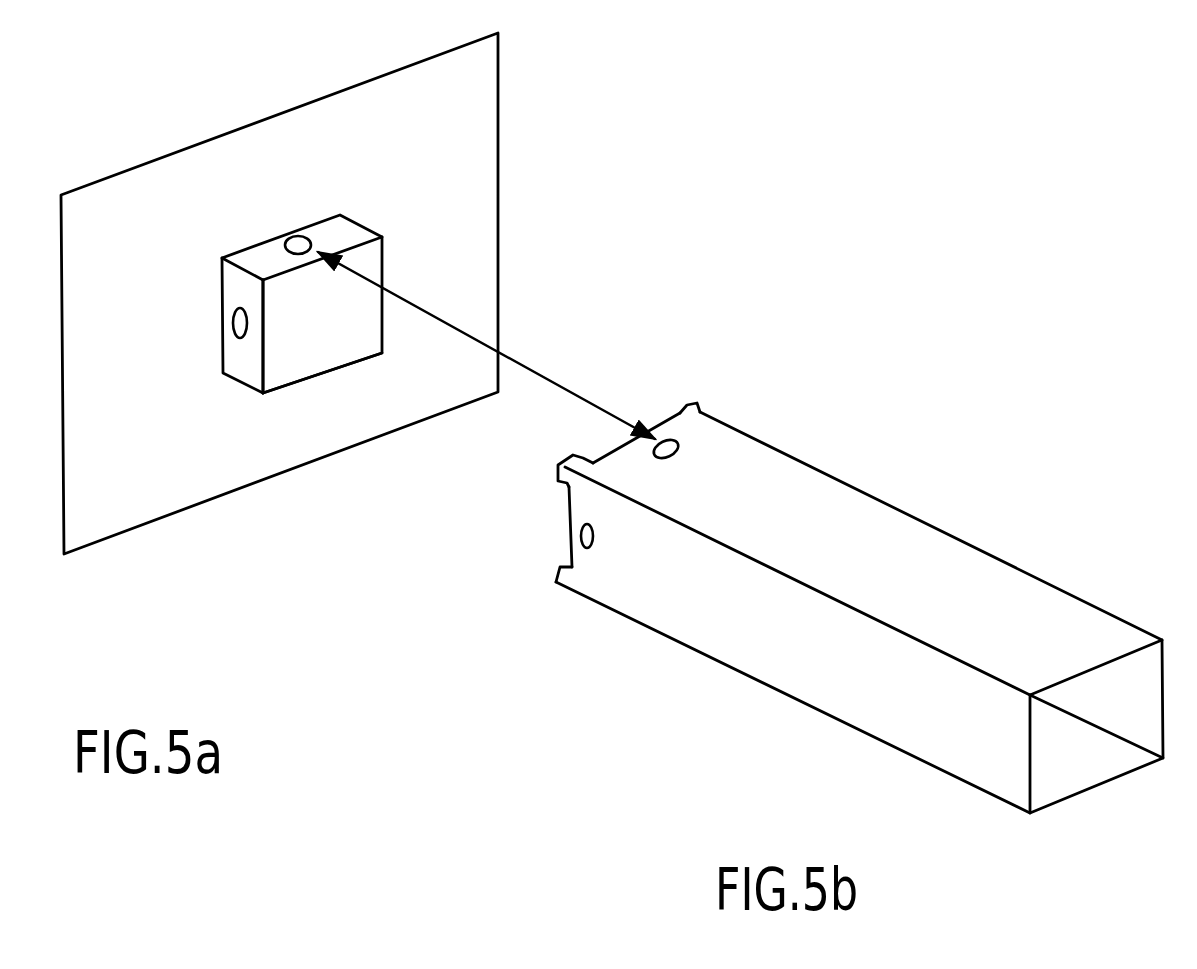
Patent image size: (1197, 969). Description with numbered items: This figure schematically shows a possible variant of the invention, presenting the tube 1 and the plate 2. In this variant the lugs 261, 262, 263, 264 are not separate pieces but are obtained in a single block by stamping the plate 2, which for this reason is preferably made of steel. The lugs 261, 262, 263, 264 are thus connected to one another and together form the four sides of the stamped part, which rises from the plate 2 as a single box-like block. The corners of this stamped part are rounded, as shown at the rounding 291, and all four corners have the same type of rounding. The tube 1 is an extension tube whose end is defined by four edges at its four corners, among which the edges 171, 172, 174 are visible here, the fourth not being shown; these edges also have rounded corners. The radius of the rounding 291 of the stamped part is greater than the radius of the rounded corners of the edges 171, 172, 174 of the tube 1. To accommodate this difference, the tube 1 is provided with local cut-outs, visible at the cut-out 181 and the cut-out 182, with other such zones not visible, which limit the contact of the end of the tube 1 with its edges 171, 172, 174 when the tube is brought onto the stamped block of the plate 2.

In FIG. 5B, the tube 1 is at (905, 502).
In FIG. 5A, the plate 2 is at (505, 145).
In FIG. 5B, the edge 171 is at (557, 466).
In FIG. 5B, the edge 172 is at (700, 410).
In FIG. 5B, the edge 174 is at (557, 583).
In FIG. 5B, the local cut-out 181 is at (566, 523).
In FIG. 5B, the local cut-out 182 is at (661, 426).
In FIG. 5A, the lug 261 is at (247, 374).
In FIG. 5A, the lug 262 is at (257, 258).
In FIG. 5A, the lug 263 is at (382, 258).
In FIG. 5A, the lug 264 is at (300, 386).
In FIG. 5A, the rounding 291 is at (275, 285).